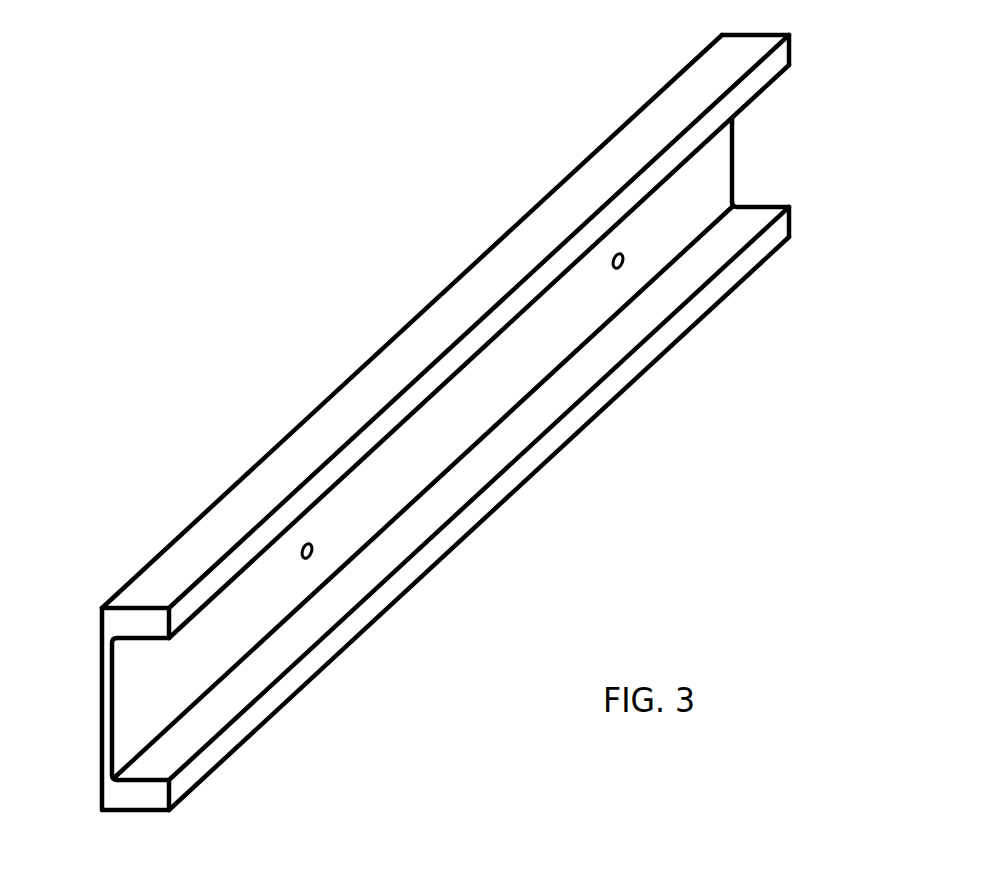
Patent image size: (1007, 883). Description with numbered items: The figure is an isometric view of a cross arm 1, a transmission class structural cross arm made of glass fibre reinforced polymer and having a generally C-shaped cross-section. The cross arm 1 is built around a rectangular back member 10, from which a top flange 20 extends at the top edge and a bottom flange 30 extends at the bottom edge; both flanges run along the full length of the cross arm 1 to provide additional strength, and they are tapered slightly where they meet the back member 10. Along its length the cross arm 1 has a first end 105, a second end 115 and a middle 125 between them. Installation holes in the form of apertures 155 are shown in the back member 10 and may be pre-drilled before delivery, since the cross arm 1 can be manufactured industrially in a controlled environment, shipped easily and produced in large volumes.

The cross arm 1 is at (372, 322).
The back member 10 is at (100, 710).
The top flange 20 is at (678, 92).
The bottom flange 30 is at (672, 292).
The first end 105 is at (130, 710).
The second end 115 is at (712, 166).
The middle 125 is at (478, 422).
The apertures 155 is at (312, 558).